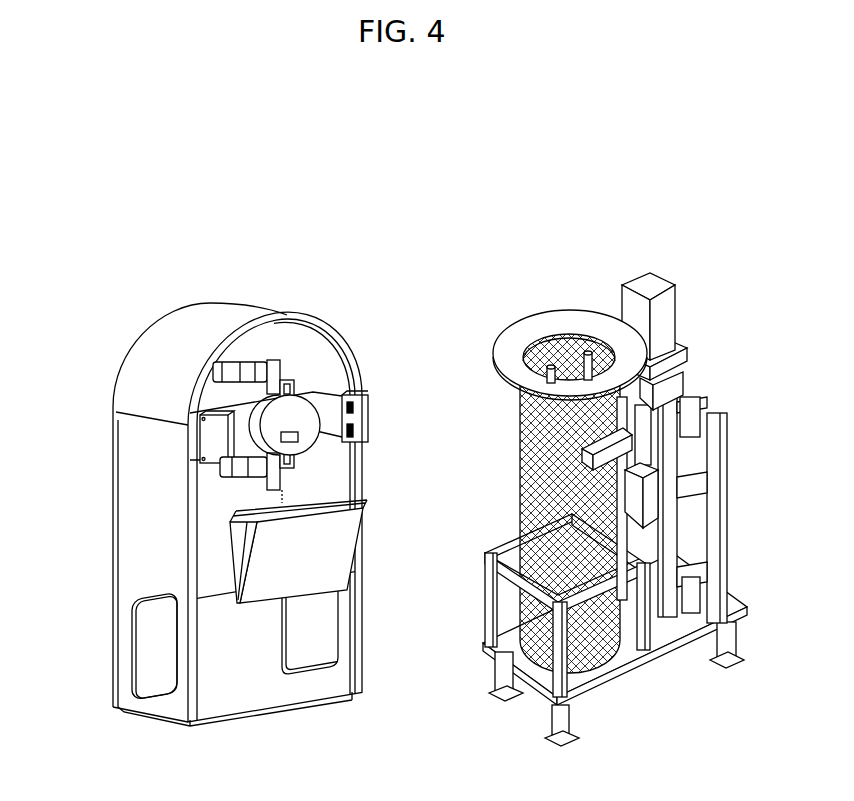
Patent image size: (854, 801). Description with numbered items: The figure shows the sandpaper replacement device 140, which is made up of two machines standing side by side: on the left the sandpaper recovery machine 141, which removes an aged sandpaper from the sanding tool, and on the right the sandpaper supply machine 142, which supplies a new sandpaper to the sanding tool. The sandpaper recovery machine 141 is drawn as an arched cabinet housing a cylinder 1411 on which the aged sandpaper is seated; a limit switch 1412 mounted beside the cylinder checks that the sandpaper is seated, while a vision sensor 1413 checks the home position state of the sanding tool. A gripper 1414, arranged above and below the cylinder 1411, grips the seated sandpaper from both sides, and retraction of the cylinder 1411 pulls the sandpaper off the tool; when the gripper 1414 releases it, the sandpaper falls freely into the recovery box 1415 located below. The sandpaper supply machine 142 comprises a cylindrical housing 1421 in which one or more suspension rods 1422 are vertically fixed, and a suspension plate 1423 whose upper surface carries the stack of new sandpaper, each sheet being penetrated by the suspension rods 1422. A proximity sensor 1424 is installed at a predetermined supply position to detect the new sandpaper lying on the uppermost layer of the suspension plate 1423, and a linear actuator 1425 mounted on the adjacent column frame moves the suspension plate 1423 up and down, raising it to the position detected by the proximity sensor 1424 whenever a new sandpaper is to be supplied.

The sandpaper replacement device 140 is at (537, 242).
The sandpaper recovery machine 141 is at (291, 306).
The sandpaper supply machine 142 is at (554, 304).
The cylinder 1411 is at (298, 422).
The limit switch 1412 is at (366, 440).
The vision sensor 1413 is at (213, 447).
The gripper 1414 is at (233, 463).
The recovery box 1415 is at (243, 549).
The cylindrical housing 1421 is at (520, 488).
The suspension rods 1422 is at (585, 352).
The suspension plate 1423 is at (537, 532).
The proximity sensor 1424 is at (603, 440).
The linear actuator 1425 is at (678, 313).